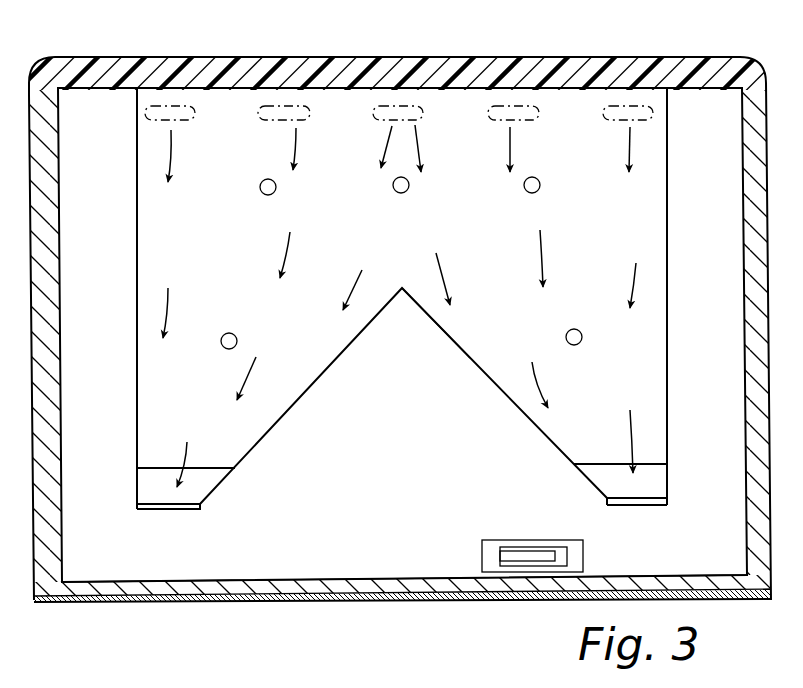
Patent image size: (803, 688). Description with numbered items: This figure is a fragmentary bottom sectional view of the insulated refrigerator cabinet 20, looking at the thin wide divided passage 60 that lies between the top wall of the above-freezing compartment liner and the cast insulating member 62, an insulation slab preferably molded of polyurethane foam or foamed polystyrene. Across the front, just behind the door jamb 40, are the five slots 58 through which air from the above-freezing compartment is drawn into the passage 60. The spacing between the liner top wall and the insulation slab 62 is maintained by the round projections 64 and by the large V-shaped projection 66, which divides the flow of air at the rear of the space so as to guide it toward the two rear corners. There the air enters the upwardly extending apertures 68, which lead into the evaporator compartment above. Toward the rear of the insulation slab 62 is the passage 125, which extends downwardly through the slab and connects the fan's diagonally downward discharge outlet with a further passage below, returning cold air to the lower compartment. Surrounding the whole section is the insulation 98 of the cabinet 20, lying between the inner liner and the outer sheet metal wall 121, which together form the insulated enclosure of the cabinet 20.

The insulated refrigerator cabinet 20 is at (125, 606).
The door jamb 40 is at (688, 68).
The slots 58 is at (272, 121).
The thin wide divided passage 60 is at (403, 366).
The cast insulating member 62 is at (383, 552).
The round projection 64 is at (267, 195).
The V-shaped projection 66 is at (447, 360).
The upwardly extending apertures 68 is at (163, 470).
The insulation 98 is at (177, 588).
The outer sheet metal wall 121 is at (256, 600).
The passage 125 is at (528, 555).